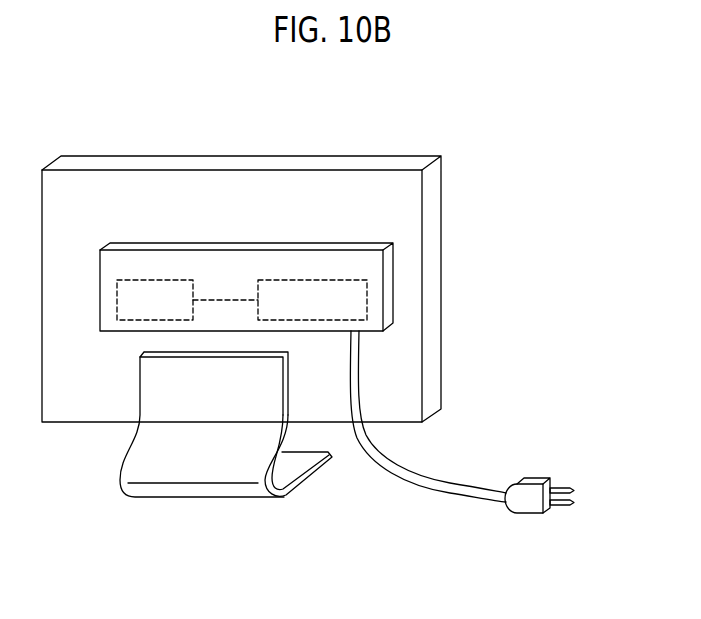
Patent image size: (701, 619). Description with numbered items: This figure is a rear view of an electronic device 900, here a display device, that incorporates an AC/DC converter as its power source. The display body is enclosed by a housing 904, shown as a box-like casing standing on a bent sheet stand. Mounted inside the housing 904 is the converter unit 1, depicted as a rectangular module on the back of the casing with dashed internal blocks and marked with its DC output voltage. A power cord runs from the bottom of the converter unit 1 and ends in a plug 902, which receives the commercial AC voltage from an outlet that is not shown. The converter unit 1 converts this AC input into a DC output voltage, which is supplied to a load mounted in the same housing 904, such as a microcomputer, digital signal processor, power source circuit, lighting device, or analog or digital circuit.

The electronic device 900 is at (295, 289).
The housing 904 is at (303, 190).
The power supply device 1 is at (352, 301).
The plug 902 is at (523, 508).